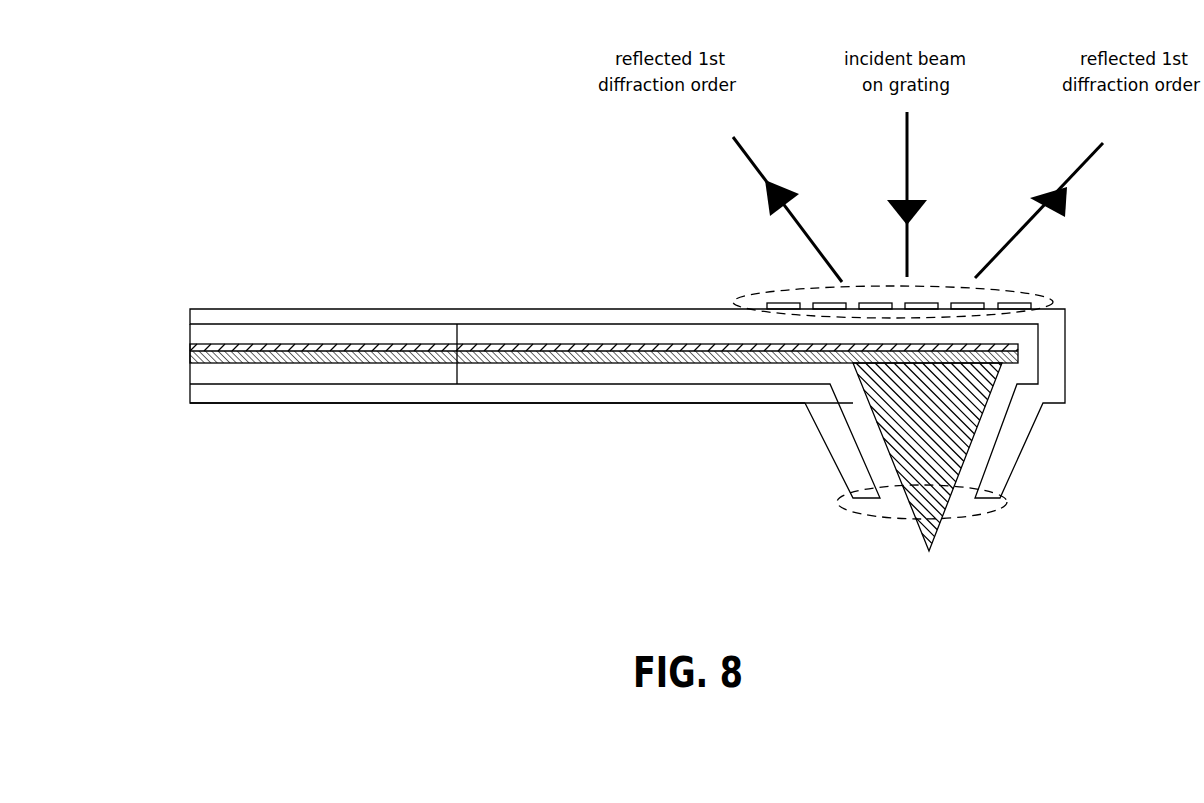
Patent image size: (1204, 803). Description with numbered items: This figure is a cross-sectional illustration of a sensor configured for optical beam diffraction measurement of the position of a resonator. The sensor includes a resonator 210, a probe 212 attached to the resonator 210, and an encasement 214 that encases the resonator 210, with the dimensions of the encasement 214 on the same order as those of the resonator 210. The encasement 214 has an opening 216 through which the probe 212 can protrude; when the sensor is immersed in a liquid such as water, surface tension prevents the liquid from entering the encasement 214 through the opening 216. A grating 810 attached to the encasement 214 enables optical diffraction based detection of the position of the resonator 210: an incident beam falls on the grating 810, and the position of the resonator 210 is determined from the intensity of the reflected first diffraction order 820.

The resonator 210 is at (562, 361).
The probe 212 is at (982, 423).
The encasement 214 is at (190, 403).
The opening 216 is at (952, 515).
The grating 810 is at (1023, 287).
The reflected first diffraction order 820 is at (1019, 227).